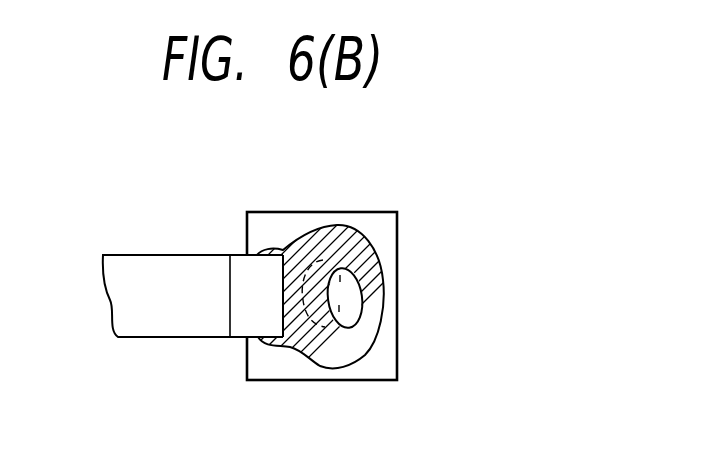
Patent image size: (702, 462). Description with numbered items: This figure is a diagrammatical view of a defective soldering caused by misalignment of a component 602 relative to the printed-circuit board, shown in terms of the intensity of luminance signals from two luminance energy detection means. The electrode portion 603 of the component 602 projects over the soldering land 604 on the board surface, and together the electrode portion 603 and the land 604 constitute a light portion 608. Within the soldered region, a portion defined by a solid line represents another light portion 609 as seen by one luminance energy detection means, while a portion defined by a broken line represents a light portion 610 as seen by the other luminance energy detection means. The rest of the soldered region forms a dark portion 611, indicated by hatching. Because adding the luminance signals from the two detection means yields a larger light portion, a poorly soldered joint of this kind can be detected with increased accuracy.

The component 602 is at (148, 263).
The electrode portion 603 is at (240, 268).
The soldering land 604 is at (263, 381).
The light portion 608 is at (297, 225).
The light portion 609 is at (358, 282).
The light portion 610 is at (322, 317).
The dark portion 611 is at (358, 333).